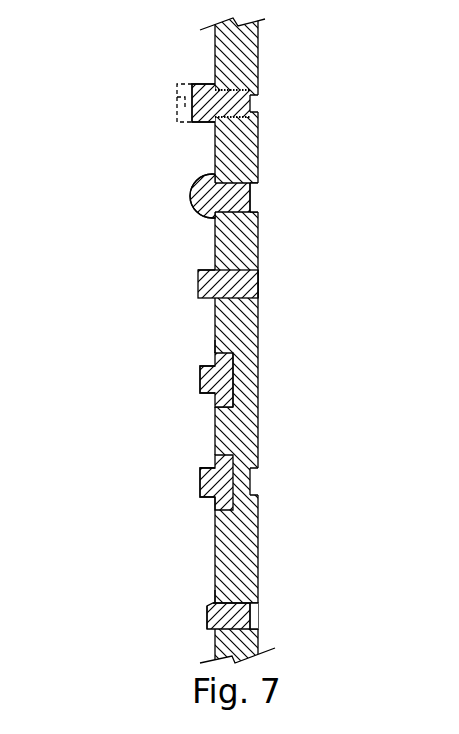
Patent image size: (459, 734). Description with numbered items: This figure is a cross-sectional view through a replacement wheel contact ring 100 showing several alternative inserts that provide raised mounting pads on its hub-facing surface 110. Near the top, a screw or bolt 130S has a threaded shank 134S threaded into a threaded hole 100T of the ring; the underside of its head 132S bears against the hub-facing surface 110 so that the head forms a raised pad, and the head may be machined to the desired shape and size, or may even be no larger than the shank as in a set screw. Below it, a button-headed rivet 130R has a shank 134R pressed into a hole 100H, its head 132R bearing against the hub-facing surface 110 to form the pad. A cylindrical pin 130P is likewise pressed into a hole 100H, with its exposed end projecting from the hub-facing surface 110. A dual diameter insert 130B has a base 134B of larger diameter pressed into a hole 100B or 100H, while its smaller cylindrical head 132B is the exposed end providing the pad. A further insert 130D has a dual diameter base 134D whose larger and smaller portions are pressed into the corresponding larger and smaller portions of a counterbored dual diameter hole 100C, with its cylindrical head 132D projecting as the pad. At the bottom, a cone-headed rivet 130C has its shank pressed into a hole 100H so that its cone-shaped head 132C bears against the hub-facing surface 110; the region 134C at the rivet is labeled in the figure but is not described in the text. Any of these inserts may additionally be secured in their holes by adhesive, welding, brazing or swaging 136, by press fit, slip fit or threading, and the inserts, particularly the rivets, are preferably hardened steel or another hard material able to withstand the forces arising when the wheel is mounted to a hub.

The replacement wheel contact ring 100 is at (246, 340).
The hub-facing surface 110 is at (213, 567).
The threaded hole 100T is at (258, 109).
The hole 100H is at (258, 203).
The hole 100B is at (235, 385).
The counterbored dual diameter hole 100C is at (250, 495).
The screw or bolt 130S is at (192, 131).
The head of screw 132S is at (192, 84).
The shank of screw 134S is at (258, 97).
The rivet 130R is at (193, 220).
The head of rivet 132R is at (192, 184).
The shank of rivet 134R is at (258, 192).
The pin 130P is at (189, 283).
The adhesive, welding, brazing or swaging 136 is at (213, 270).
The dual diameter insert 130B is at (192, 400).
The cylindrical head of dual diameter insert 132B is at (198, 371).
The base of dual diameter insert 134B is at (213, 355).
The insert with dual diameter base 130D is at (192, 503).
The cylindrical head of insert 132D is at (198, 477).
The dual diameter base 134D is at (213, 500).
The cone-headed rivet 130C is at (198, 630).
The cone-shaped head 132C is at (207, 604).
The fillet of fastener C 134C is at (236, 601).